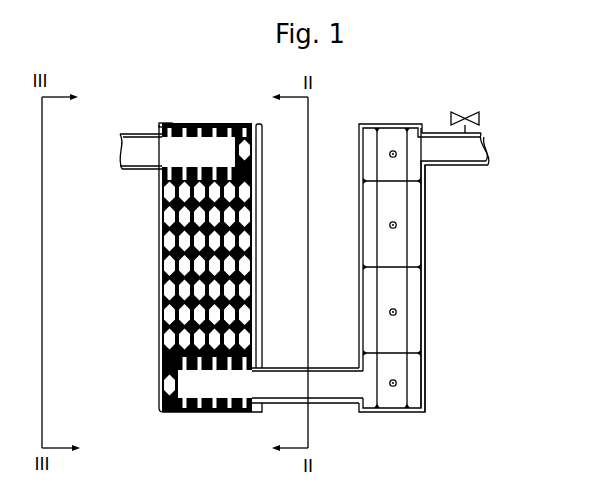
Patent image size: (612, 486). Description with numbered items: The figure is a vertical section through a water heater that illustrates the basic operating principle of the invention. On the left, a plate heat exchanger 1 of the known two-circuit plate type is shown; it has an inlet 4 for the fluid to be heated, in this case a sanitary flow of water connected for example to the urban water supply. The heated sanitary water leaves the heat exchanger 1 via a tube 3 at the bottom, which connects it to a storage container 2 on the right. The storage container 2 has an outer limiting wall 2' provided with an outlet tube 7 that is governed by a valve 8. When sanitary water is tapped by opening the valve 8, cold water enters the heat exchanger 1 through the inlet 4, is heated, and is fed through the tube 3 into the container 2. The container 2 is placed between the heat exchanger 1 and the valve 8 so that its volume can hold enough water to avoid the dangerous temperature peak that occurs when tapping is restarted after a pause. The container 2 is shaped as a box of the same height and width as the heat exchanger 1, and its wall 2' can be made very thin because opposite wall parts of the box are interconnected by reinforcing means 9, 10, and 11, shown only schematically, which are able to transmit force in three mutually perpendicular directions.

The plate heat exchanger 1 is at (208, 112).
The storage container 2 is at (424, 236).
The outer limiting wall 2' is at (457, 270).
The tube 3 is at (342, 385).
The inlet 4 is at (147, 152).
The outlet tube 7 is at (428, 152).
The valve 8 is at (477, 113).
The reinforcing means 9 is at (408, 225).
The reinforcing means 10 is at (398, 313).
The reinforcing means 11 is at (400, 355).